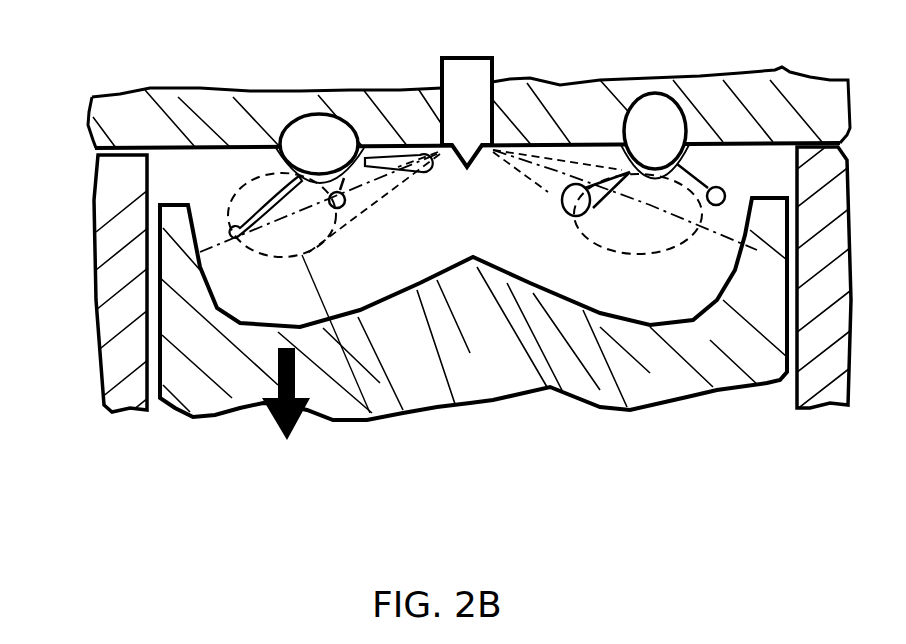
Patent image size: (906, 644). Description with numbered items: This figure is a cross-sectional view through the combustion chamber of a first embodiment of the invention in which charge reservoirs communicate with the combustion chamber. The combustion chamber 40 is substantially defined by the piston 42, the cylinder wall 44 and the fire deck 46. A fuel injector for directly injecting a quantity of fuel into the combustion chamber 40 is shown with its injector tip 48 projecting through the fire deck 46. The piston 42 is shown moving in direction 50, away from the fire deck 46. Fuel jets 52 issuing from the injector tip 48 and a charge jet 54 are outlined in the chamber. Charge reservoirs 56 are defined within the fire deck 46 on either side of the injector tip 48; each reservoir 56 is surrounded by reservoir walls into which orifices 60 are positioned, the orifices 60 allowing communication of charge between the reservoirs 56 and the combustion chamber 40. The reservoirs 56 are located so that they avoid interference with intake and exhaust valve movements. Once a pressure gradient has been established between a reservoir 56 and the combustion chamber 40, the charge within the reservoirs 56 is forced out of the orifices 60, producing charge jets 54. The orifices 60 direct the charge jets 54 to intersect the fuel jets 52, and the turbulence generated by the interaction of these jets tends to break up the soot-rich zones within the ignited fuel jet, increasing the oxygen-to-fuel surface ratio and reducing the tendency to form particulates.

The combustion chamber 40 is at (257, 293).
The piston 42 is at (707, 340).
The cylinder wall 44 is at (132, 207).
The fire deck 46 is at (733, 137).
The injector tip 48 is at (467, 133).
The direction 50 is at (286, 419).
The fuel jets 52 is at (540, 183).
The charge jet 54 is at (575, 215).
The charge reservoirs 56 is at (637, 130).
The orifices 60 is at (630, 172).